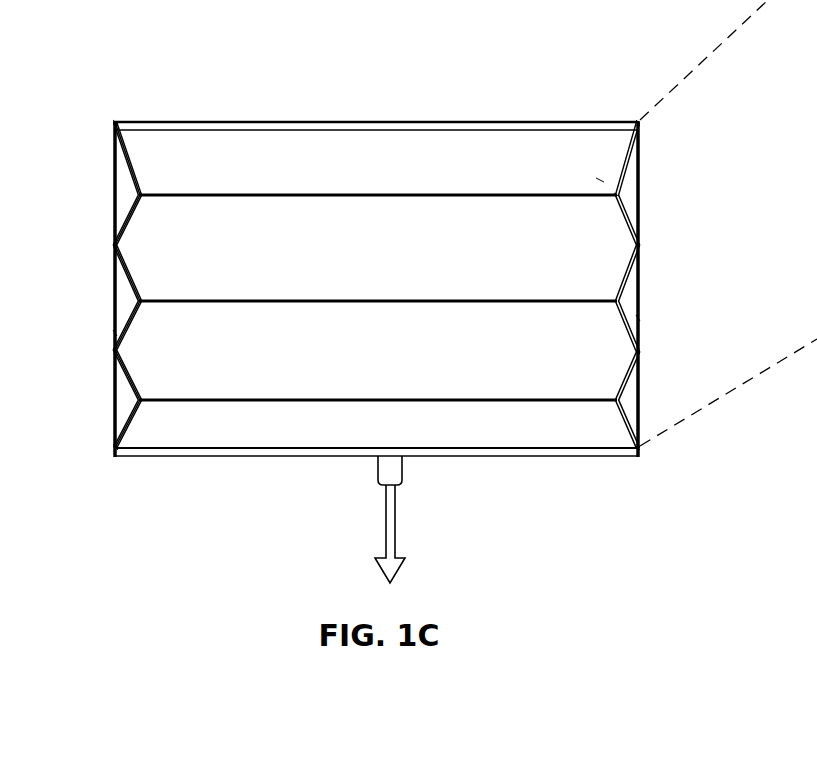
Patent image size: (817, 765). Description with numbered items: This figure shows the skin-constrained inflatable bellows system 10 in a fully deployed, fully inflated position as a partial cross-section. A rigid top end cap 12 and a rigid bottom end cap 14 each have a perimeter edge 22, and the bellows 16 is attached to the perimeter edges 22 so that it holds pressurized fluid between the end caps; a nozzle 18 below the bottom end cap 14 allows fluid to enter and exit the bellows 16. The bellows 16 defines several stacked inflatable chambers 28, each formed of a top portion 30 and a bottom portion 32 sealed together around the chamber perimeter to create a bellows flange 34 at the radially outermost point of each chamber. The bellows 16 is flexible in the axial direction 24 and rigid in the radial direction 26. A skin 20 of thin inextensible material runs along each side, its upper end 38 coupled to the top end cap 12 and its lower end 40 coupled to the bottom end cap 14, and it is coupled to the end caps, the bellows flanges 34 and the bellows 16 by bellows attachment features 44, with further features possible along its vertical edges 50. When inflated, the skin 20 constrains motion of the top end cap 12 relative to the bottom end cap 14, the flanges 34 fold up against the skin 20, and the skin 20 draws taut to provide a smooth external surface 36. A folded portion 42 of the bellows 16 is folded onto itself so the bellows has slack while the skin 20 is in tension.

The skin-constrained inflatable bellows system 10 is at (655, 14).
The top end cap 12 is at (480, 121).
The bottom end cap 14 is at (494, 457).
The bellows 16 is at (608, 178).
The nozzle 18 is at (402, 472).
The skin 20 is at (113, 290).
The perimeter edge 22 is at (118, 121).
The axial direction 24 is at (735, 163).
The radial direction 26 is at (286, 93).
The inflatable chamber 28 is at (378, 291).
The top portion 30 is at (132, 164).
The bottom portion 32 is at (143, 200).
The bellows flange 34 is at (133, 120).
The external surface 36 is at (102, 336).
The upper end 38 is at (113, 127).
The lower end 40 is at (113, 433).
The folded portion 42 is at (630, 194).
The bellows attachment feature 44 is at (116, 121).
The vertical edge 50 is at (113, 377).